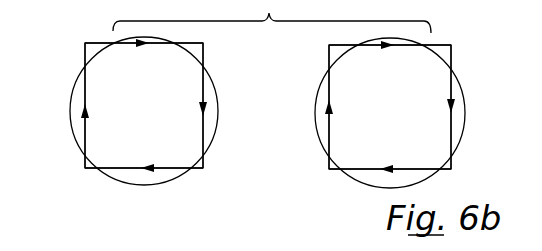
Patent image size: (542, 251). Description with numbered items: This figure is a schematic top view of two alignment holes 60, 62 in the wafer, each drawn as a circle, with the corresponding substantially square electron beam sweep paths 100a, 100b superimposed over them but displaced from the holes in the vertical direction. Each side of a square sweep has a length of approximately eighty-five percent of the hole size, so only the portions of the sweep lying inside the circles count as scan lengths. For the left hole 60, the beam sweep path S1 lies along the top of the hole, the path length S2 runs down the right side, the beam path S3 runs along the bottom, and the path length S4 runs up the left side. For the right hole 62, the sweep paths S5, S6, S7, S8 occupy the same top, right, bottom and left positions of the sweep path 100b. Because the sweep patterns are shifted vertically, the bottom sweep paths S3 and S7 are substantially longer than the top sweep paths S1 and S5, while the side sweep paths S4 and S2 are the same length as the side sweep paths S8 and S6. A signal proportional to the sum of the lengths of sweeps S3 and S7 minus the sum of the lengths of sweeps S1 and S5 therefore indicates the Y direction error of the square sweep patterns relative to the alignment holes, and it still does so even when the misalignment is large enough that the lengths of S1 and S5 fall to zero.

The beam sweep path 100a is at (77, 50).
The beam sweep path 100b is at (461, 49).
The alignment hole 60 is at (73, 147).
The alignment hole 62 is at (323, 143).
The beam sweep path S1 is at (128, 42).
The path length S2 is at (208, 98).
The beam path S3 is at (133, 168).
The path length S4 is at (85, 101).
The sweep path S5 is at (405, 45).
The sweep path S6 is at (452, 128).
The sweep path S7 is at (372, 169).
The sweep path S8 is at (328, 132).